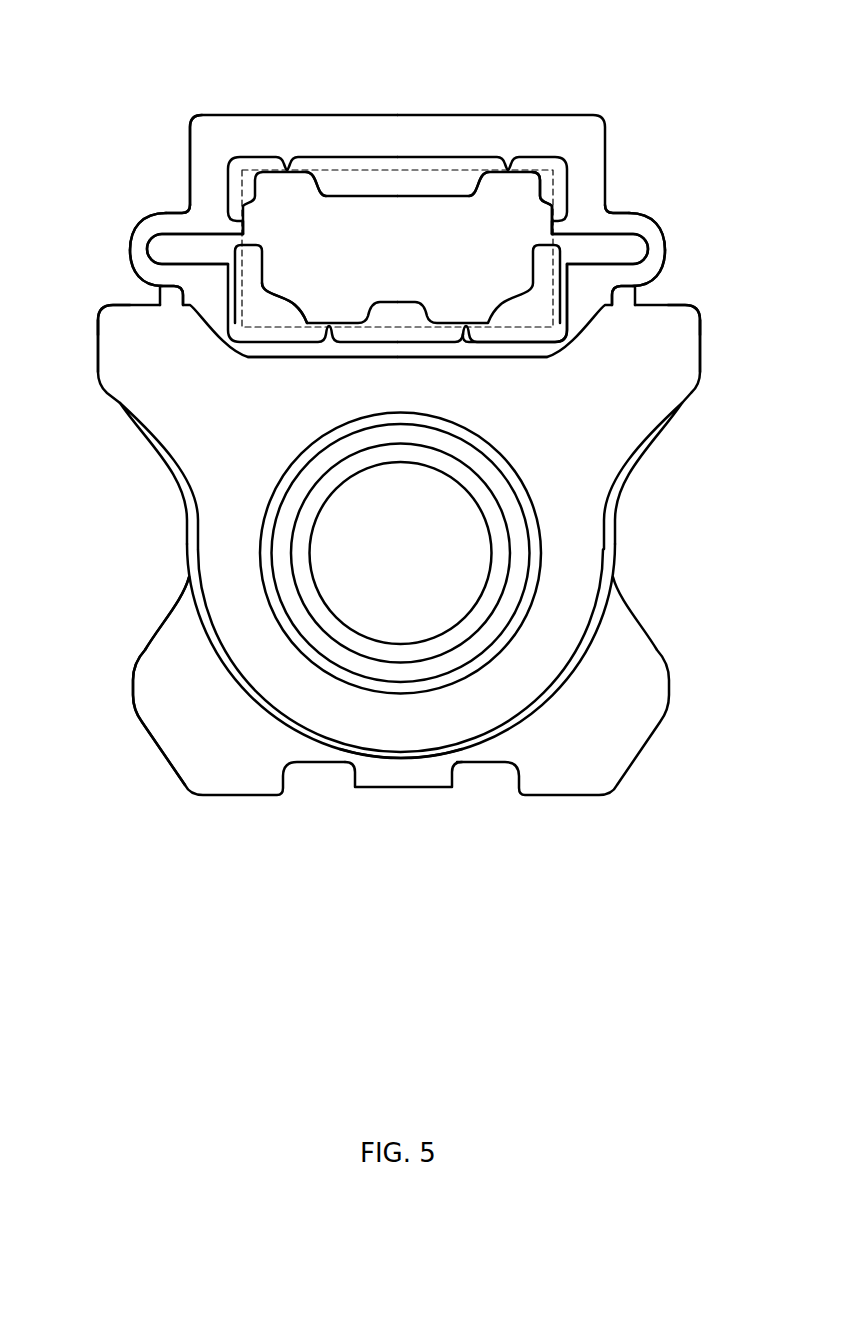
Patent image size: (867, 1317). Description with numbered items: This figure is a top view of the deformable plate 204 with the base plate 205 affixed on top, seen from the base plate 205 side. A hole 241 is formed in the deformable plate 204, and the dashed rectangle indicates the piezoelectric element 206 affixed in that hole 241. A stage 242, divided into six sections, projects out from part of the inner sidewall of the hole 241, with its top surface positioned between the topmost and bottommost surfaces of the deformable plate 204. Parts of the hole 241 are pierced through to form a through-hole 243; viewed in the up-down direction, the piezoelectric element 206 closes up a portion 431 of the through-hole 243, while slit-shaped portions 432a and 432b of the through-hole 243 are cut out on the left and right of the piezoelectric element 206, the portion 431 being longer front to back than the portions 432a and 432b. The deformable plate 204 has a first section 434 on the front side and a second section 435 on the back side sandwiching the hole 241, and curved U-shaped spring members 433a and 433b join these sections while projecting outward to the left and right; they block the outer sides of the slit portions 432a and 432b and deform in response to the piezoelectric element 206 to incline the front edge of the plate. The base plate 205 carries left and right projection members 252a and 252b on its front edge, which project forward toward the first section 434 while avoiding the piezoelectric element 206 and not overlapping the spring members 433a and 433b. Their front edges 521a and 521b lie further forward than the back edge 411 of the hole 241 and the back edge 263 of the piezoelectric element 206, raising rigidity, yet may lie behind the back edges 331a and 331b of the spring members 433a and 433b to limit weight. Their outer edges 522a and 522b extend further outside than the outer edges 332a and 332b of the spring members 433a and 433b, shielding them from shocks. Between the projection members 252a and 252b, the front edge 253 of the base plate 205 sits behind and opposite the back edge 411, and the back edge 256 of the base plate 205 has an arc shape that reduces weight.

The deformable plate 204 is at (567, 796).
The base plate 205 is at (568, 677).
The piezoelectric element 206 is at (434, 168).
The hole 241 is at (337, 180).
The stage 242 is at (380, 200).
The through-hole 243 is at (507, 242).
The left projection member 252a is at (115, 310).
The right projection member 252b is at (696, 305).
The front edge of the base plate 253 is at (315, 338).
The back edge of the base plate 256 is at (399, 758).
The back edge of the piezoelectric element 263 is at (513, 328).
The back edge of spring member 433a 331a is at (175, 300).
The back edge of spring member 433b 331b is at (627, 303).
The outer edge of spring member 433a 332a is at (138, 222).
The outer edge of spring member 433b 332b is at (669, 245).
The back edge of the hole 411 is at (392, 352).
The portion of the through-hole 431 is at (397, 248).
The left slit-shaped portion of the through-hole 432a is at (195, 249).
The right slit-shaped portion of the through-hole 432b is at (600, 249).
The left spring member 433a is at (166, 215).
The right spring member 433b is at (634, 213).
The first section 434 is at (189, 165).
The second section 435 is at (148, 716).
The front edge of projection member 252a 521a is at (131, 262).
The front edge of projection member 252b 521b is at (652, 298).
The outer edge of projection member 252a 522a is at (96, 348).
The outer edge of projection member 252b 522b is at (702, 345).